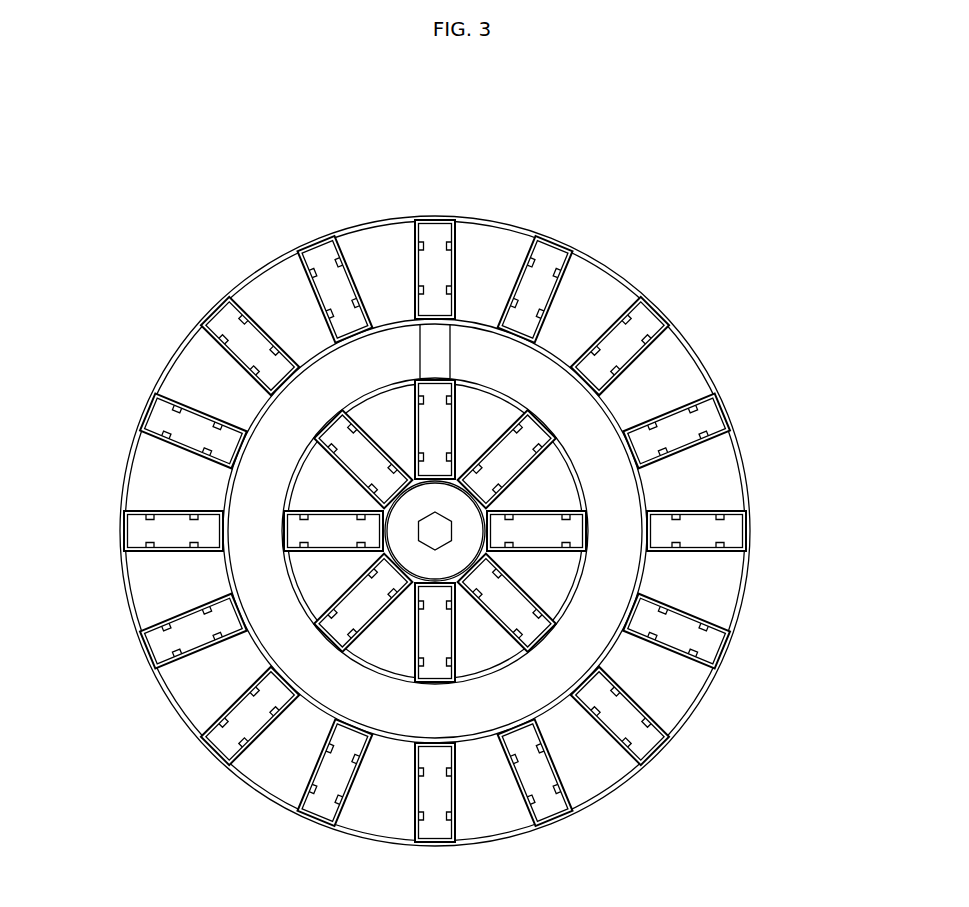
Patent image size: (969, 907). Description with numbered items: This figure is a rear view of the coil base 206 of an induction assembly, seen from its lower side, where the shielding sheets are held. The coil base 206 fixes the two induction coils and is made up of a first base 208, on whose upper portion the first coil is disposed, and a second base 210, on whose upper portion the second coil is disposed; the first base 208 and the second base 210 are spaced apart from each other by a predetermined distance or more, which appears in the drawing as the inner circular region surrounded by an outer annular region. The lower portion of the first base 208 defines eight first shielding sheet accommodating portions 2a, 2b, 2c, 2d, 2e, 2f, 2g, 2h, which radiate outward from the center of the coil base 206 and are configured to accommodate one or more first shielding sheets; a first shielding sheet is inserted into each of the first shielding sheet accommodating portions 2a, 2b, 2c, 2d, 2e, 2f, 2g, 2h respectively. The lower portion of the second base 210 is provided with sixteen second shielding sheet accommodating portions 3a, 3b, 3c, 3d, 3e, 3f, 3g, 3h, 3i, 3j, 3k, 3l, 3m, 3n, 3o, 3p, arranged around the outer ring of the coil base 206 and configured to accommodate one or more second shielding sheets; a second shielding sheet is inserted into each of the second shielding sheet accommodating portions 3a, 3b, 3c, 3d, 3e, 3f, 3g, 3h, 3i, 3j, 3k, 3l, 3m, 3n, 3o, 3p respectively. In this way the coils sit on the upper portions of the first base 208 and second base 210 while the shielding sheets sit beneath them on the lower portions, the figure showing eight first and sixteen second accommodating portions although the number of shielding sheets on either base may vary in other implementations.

The coil base 206 is at (677, 235).
The first base 208 is at (588, 492).
The second base 210 is at (605, 268).
The first shielding sheet accommodating portion 2a is at (432, 400).
The first shielding sheet accommodating portion 2b is at (527, 438).
The first shielding sheet accommodating portion 2c is at (565, 528).
The first shielding sheet accommodating portion 2d is at (527, 625).
The first shielding sheet accommodating portion 2e is at (435, 662).
The first shielding sheet accommodating portion 2f is at (343, 625).
The first shielding sheet accommodating portion 2g is at (300, 530).
The first shielding sheet accommodating portion 2h is at (342, 438).
The second shielding sheet accommodating portion 3a is at (434, 232).
The second shielding sheet accommodating portion 3b is at (550, 255).
The second shielding sheet accommodating portion 3c is at (647, 320).
The second shielding sheet accommodating portion 3d is at (712, 415).
The second shielding sheet accommodating portion 3e is at (735, 532).
The second shielding sheet accommodating portion 3f is at (712, 645).
The second shielding sheet accommodating portion 3g is at (647, 742).
The second shielding sheet accommodating portion 3h is at (548, 807).
The second shielding sheet accommodating portion 3i is at (435, 830).
The second shielding sheet accommodating portion 3j is at (322, 805).
The second shielding sheet accommodating portion 3k is at (222, 745).
The second shielding sheet accommodating portion 3l is at (290, 598).
The second shielding sheet accommodating portion 3m is at (140, 530).
The second shielding sheet accommodating portion 3n is at (158, 418).
The second shielding sheet accommodating portion 3o is at (222, 320).
The second shielding sheet accommodating portion 3p is at (318, 255).